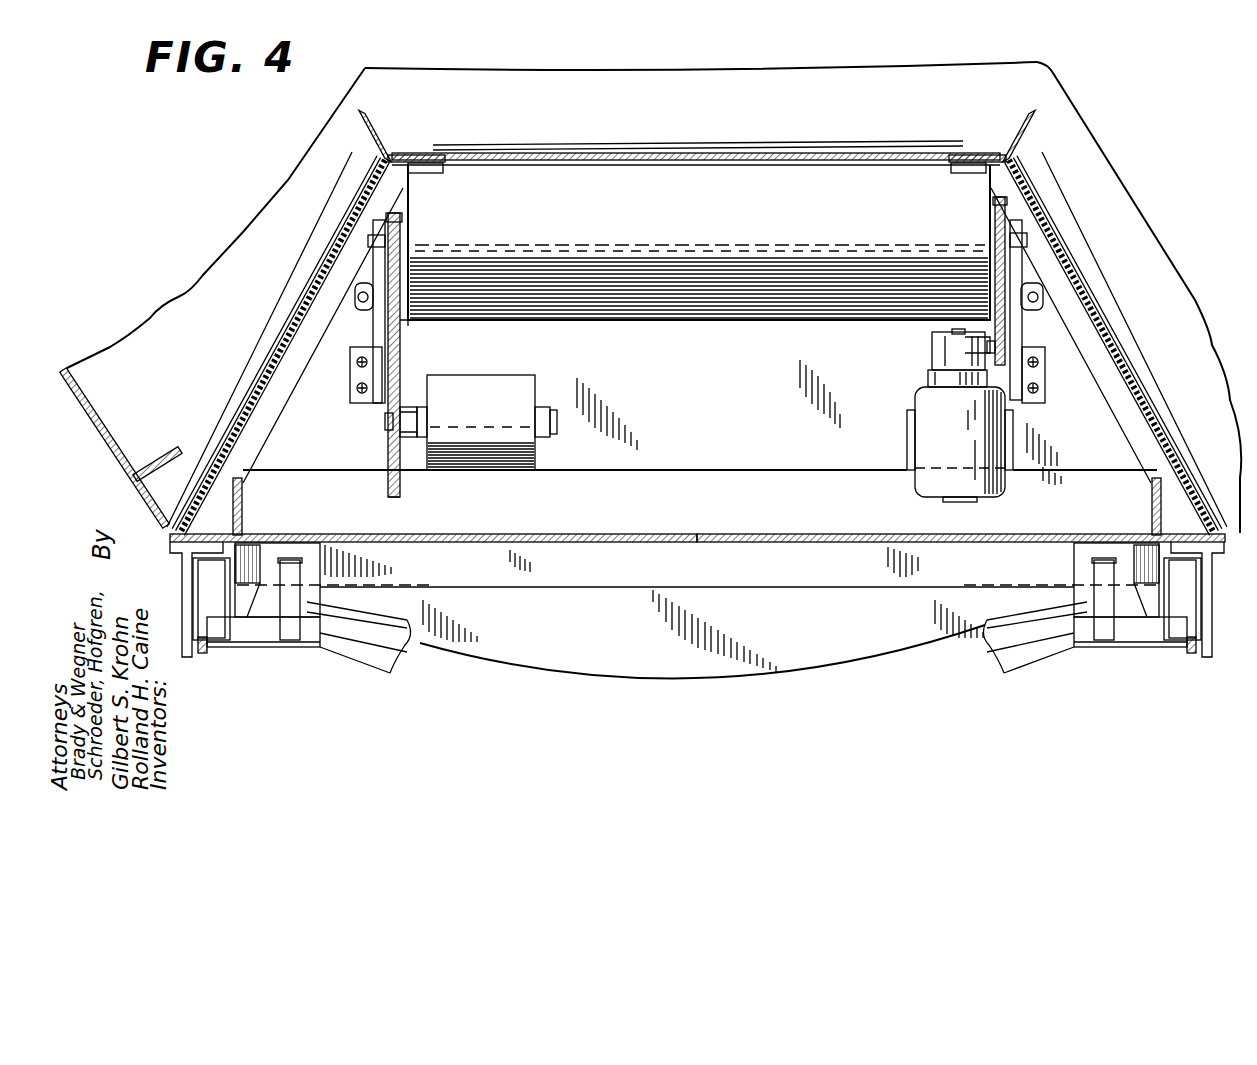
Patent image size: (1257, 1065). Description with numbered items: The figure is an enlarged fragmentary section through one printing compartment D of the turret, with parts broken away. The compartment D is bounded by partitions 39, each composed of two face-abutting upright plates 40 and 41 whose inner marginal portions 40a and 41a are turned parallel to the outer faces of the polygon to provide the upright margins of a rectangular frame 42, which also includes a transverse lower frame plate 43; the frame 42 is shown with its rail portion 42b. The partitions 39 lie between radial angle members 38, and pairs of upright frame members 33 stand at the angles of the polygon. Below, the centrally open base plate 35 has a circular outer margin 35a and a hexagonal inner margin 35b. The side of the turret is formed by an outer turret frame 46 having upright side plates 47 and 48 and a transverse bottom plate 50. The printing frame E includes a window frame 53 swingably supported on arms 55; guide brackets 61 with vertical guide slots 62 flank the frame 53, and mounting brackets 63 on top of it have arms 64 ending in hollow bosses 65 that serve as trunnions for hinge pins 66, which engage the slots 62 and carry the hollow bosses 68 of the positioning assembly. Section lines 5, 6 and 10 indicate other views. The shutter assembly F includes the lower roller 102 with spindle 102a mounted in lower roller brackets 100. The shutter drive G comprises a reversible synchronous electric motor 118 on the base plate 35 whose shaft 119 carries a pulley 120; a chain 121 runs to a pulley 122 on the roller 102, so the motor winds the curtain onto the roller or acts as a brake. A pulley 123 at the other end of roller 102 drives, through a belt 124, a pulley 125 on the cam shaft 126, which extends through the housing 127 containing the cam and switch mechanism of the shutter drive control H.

The section line 5- 5 is at (280, 512).
The section line 6- 6 is at (180, 560).
The section line 10- 10 is at (420, 358).
The upright frame members 33 is at (160, 470).
The base plate 35 is at (543, 647).
The circular outer margin 35a is at (760, 680).
The hexagonal inner margin 35b is at (545, 145).
The radial angle members 38 is at (243, 368).
The partitions 39 is at (270, 352).
The upright plate 40 is at (303, 290).
The inner marginal portion 40a is at (372, 125).
The upright plate 41 is at (283, 335).
The inner marginal portion 41a is at (392, 160).
The rectangular frame 42 is at (752, 143).
The rail plate 42b is at (640, 150).
The transverse lower frame plate 43 is at (862, 158).
The outer turret frame 46 is at (680, 513).
The upright turret frame side plate 47 is at (313, 543).
The upright turret frame side plate 48 is at (1087, 542).
The transverse turret frame bottom plate 50 is at (783, 543).
The window frame 53 is at (580, 560).
The arms 55 is at (217, 653).
The guide brackets 61 is at (193, 600).
The vertical guide slot 62 is at (193, 617).
The mounting brackets 63 is at (313, 557).
The arms 64 is at (322, 598).
The hollow bosses 65 is at (277, 647).
The hinge pins 66 is at (340, 647).
The hollow bosses 68 is at (250, 647).
The lower roller brackets 100 is at (383, 330).
The lower roller 102 is at (852, 293).
The spindle 102a is at (373, 222).
The electric motor 118 is at (993, 433).
The shaft 119 is at (937, 330).
The pulley 120 is at (1010, 338).
The chain 121 is at (990, 250).
The pulley 122 is at (995, 215).
The pulley 123 is at (403, 226).
The belt 124 is at (400, 323).
The pulley 125 is at (403, 487).
The cam shaft 126 is at (387, 425).
The housing 127 is at (517, 373).
The printing compartment D is at (747, 376).
The printing frame E is at (1110, 653).
The shutter assembly F is at (677, 323).
The shutter drive mechanism G is at (907, 423).
The shutter drive control mechanism H is at (540, 390).